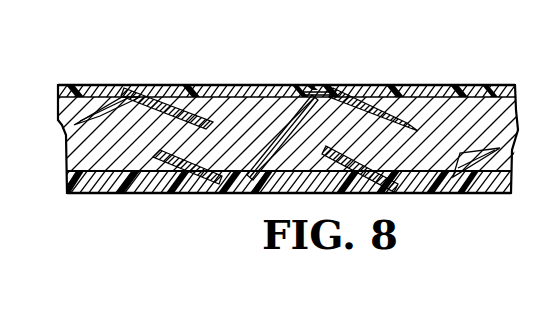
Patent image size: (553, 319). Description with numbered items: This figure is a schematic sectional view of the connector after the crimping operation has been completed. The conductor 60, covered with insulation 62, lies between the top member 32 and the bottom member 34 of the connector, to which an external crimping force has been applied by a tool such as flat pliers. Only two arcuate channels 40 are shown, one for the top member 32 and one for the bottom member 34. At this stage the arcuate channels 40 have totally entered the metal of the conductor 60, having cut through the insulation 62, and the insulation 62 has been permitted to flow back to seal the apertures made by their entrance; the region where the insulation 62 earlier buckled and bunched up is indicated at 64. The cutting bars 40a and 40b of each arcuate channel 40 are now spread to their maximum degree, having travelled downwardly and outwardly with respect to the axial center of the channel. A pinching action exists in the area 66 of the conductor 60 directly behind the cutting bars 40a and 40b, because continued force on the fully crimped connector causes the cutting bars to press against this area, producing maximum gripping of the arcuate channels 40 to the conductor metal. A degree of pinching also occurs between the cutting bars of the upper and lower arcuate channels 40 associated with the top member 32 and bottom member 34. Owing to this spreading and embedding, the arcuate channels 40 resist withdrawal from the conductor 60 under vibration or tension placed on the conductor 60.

The top member 32 is at (197, 92).
The bottom member 34 is at (67, 190).
The arcuate channels 40 is at (340, 106).
The cutting bar 40a is at (253, 129).
The cutting bar 40b is at (360, 166).
The conductor 60 is at (236, 161).
The insulation 62 is at (227, 90).
The buckled insulation 64 is at (308, 91).
The pinched area of conductor 66 is at (387, 130).